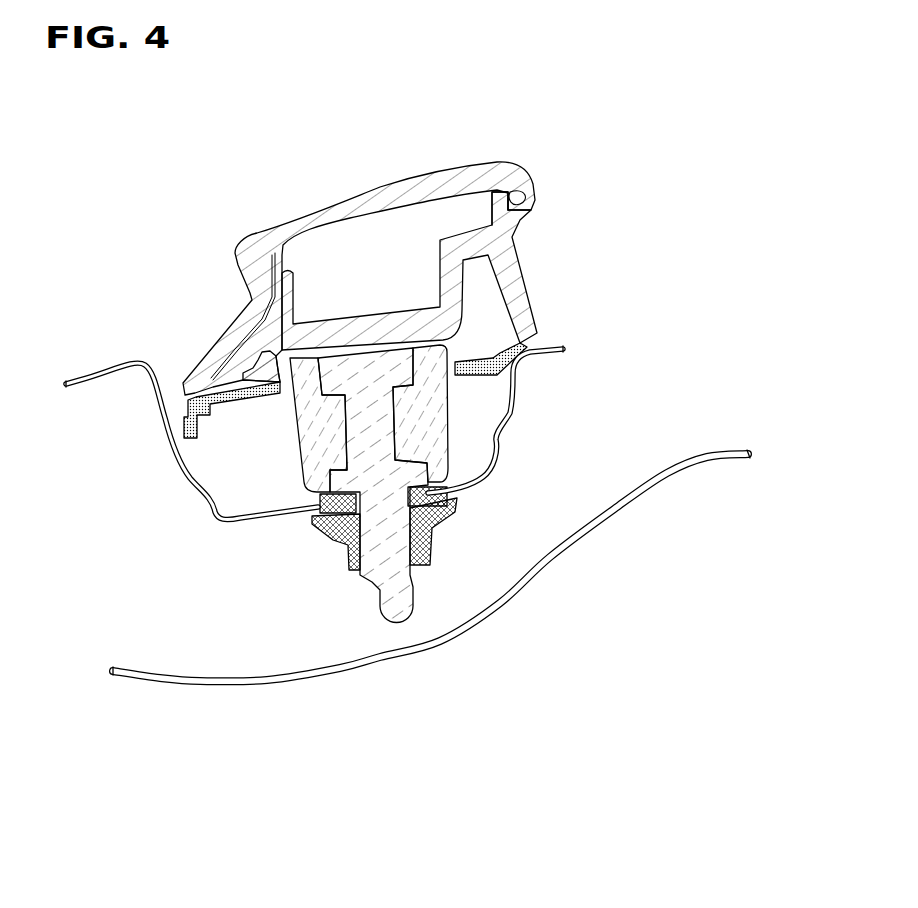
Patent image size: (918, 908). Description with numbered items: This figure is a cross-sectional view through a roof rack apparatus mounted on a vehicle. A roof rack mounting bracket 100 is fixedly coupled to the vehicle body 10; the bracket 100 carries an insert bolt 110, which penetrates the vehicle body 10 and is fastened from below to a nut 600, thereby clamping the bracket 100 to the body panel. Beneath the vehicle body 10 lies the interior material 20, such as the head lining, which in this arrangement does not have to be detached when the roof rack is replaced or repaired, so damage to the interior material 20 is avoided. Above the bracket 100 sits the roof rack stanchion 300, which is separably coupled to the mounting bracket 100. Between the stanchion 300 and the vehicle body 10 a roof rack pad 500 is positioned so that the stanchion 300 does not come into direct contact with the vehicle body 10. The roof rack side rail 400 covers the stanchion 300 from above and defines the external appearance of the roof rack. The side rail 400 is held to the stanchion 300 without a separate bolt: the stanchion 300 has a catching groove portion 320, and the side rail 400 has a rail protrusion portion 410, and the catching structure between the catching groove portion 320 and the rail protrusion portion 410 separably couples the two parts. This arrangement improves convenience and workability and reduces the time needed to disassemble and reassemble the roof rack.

The vehicle body 10 is at (82, 378).
The interior material 20 is at (143, 666).
The roof rack mounting bracket 100 is at (425, 428).
The insert bolt 110 is at (394, 620).
The roof rack stanchion 300 is at (360, 337).
The catching groove portion 320 is at (506, 190).
The roof rack side rail 400 is at (380, 197).
The rail protrusion portion 410 is at (534, 198).
The roof rack pad 500 is at (175, 424).
The nut 600 is at (340, 550).